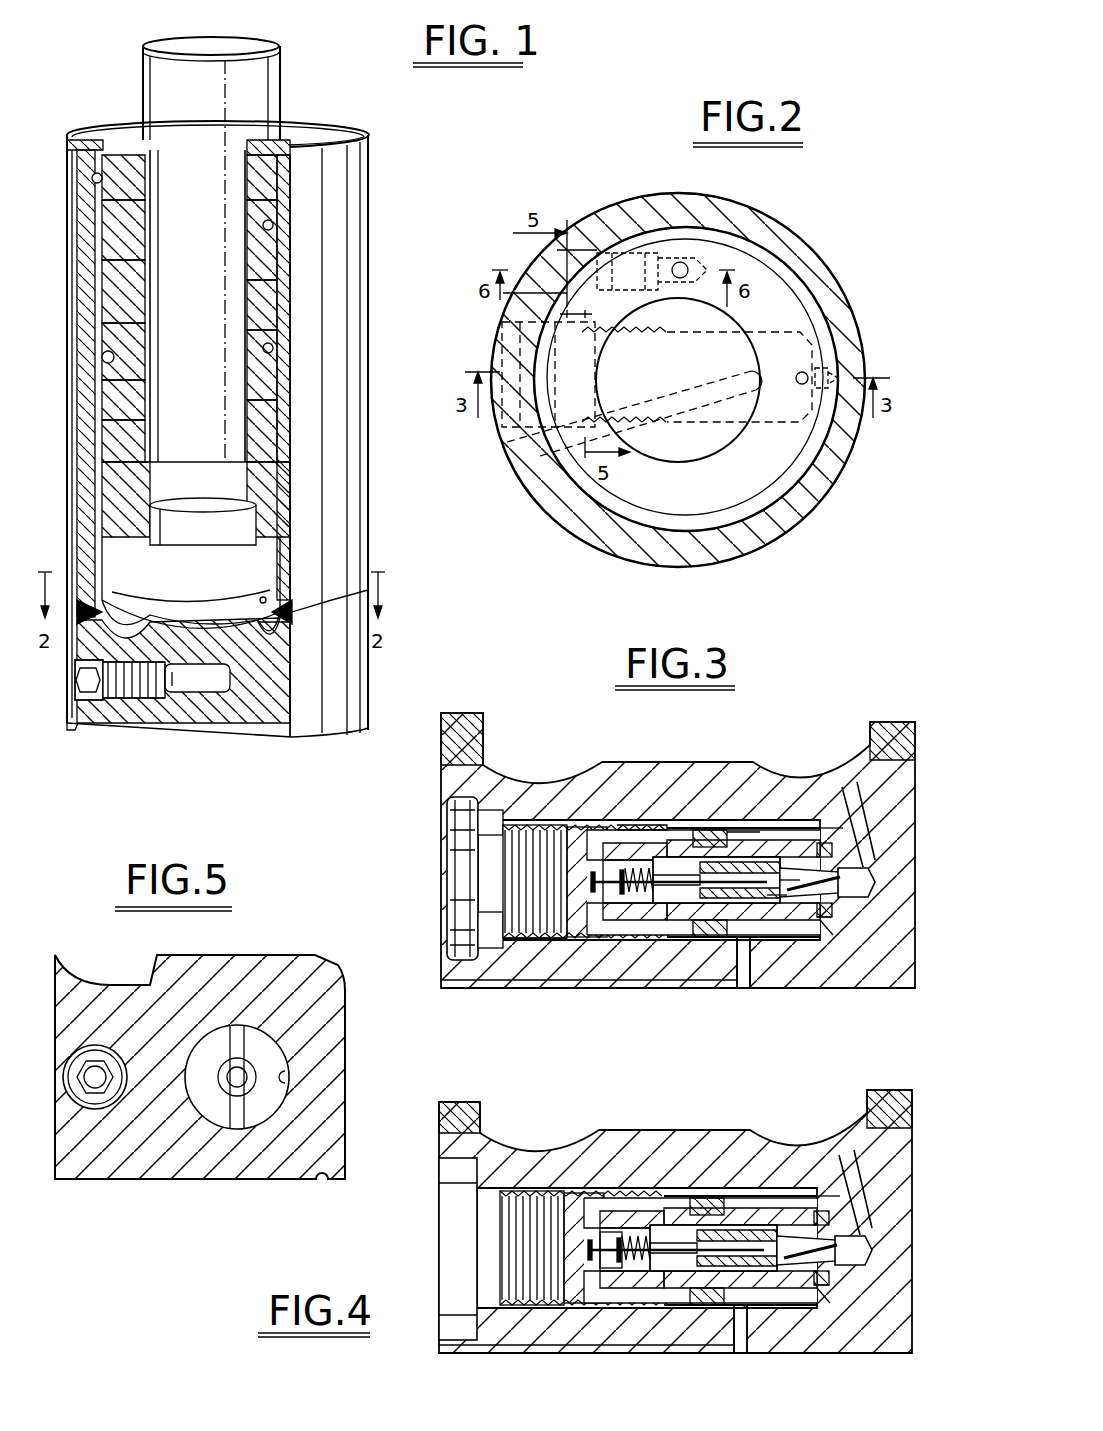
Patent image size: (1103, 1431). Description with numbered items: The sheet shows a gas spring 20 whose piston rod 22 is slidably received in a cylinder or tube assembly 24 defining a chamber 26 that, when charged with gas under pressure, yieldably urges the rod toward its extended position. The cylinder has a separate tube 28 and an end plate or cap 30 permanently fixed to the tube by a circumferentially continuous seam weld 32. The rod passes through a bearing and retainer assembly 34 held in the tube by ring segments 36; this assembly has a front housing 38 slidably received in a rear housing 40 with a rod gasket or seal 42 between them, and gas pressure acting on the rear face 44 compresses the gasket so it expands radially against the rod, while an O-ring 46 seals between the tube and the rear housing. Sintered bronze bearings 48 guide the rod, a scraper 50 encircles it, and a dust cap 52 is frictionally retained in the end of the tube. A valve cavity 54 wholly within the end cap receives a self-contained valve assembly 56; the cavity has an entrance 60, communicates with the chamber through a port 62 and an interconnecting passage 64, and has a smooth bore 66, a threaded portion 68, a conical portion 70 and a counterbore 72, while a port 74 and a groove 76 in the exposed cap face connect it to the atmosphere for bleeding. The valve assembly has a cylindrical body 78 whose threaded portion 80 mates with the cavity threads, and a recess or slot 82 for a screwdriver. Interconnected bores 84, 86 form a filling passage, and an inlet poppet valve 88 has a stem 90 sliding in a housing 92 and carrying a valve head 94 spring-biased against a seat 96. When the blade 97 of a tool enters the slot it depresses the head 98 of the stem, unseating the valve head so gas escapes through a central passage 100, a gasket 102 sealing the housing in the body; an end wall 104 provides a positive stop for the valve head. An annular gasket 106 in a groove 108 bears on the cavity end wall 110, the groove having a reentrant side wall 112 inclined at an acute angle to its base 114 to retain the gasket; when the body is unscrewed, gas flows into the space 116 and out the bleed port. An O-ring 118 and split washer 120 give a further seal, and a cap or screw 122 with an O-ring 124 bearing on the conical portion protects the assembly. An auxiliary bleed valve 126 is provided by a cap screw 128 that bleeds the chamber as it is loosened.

In FIG. 1, the gas spring 20 is at (428, 111).
In FIG. 1, the piston rod 22 is at (274, 43).
In FIG. 1, the cylinder or tube assembly 24 is at (375, 305).
In FIG. 1, the chamber 26 is at (138, 553).
In FIG. 1, the tube 28 is at (347, 450).
In FIG. 1, the end plate or cap 30 is at (350, 668).
In FIG. 2, the end plate or cap 30 is at (678, 380).
In FIG. 5, the end plate or cap 30 is at (55, 1155).
In FIG. 1, the seam weld 32 is at (347, 590).
In FIG. 1, the bearing and retainer assembly 34 is at (95, 297).
In FIG. 1, the ring segments 36 is at (94, 176).
In FIG. 1, the front housing 38 is at (276, 190).
In FIG. 1, the rear housing 40 is at (107, 342).
In FIG. 1, the rod gasket or seal 42 is at (288, 275).
In FIG. 1, the rear face 44 is at (117, 422).
In FIG. 1, the O-ring 46 is at (104, 360).
In FIG. 1, the bearings 48 is at (262, 224).
In FIG. 1, the scraper 50 is at (300, 143).
In FIG. 1, the dust cap 52 is at (302, 131).
In FIG. 1, the valve cavity 54 is at (175, 697).
In FIG. 3, the self-contained valve assembly 56 is at (592, 890).
In FIG. 1, the entrance 60 is at (76, 677).
In FIG. 2, the entrance 60 is at (657, 374).
In FIG. 3, the port 62 is at (866, 883).
In FIG. 1, the interconnecting passage 64 is at (259, 600).
In FIG. 2, the interconnecting passage 64 is at (798, 385).
In FIG. 3, the interconnecting passage 64 is at (842, 787).
In FIG. 4, the interconnecting passage 64 is at (824, 1207).
In FIG. 1, the smooth bore 66 is at (217, 690).
In FIG. 1, the threaded portion 68 is at (143, 700).
In FIG. 5, the threaded portion 68 is at (285, 1090).
In FIG. 1, the conical portion 70 is at (108, 700).
In FIG. 1, the counterbore 72 is at (70, 722).
In FIG. 3, the counterbore 72 is at (447, 797).
In FIG. 3, the port 74 is at (740, 987).
In FIG. 4, the port 74 is at (738, 1345).
In FIG. 3, the groove 76 is at (475, 982).
In FIG. 4, the groove 76 is at (482, 1347).
In FIG. 5, the groove 76 is at (320, 1186).
In FIG. 3, the body 78 is at (617, 823).
In FIG. 5, the body 78 is at (270, 1053).
In FIG. 3, the threaded portion 80 is at (590, 848).
In FIG. 4, the threaded portion 80 is at (595, 1213).
In FIG. 3, the recess or slot 82 is at (605, 860).
In FIG. 4, the recess or slot 82 is at (590, 1293).
In FIG. 5, the recess or slot 82 is at (239, 1033).
In FIG. 3, the bore 84 is at (767, 895).
In FIG. 3, the bore 86 is at (810, 905).
In FIG. 3, the inlet poppet valve 88 is at (625, 907).
In FIG. 3, the stem 90 is at (505, 965).
In FIG. 4, the stem 90 is at (620, 1227).
In FIG. 3, the housing 92 is at (675, 913).
In FIG. 4, the housing 92 is at (657, 1230).
In FIG. 3, the valve head 94 is at (767, 857).
In FIG. 4, the valve head 94 is at (763, 1223).
In FIG. 4, the seat 96 is at (710, 1233).
In FIG. 4, the blade 97 is at (439, 1277).
In FIG. 3, the head 98 is at (580, 858).
In FIG. 4, the central passage 100 is at (685, 1255).
In FIG. 4, the gasket 102 is at (655, 1270).
In FIG. 3, the end wall 104 is at (800, 890).
In FIG. 4, the end wall 104 is at (607, 1228).
In FIG. 3, the annular gasket 106 is at (846, 895).
In FIG. 4, the annular gasket 106 is at (837, 1280).
In FIG. 3, the groove 108 is at (830, 915).
In FIG. 4, the groove 108 is at (827, 1290).
In FIG. 3, the cavity end wall 110 is at (813, 843).
In FIG. 4, the cavity end wall 110 is at (803, 1207).
In FIG. 3, the reentrant side wall 112 is at (822, 828).
In FIG. 4, the reentrant side wall 112 is at (830, 1210).
In FIG. 3, the base 114 is at (818, 917).
In FIG. 4, the base 114 is at (820, 1293).
In FIG. 3, the space 116 is at (732, 833).
In FIG. 4, the space 116 is at (775, 1280).
In FIG. 3, the O-ring 118 is at (700, 835).
In FIG. 3, the split washer 120 is at (637, 822).
In FIG. 3, the cap or screw 122 is at (478, 853).
In FIG. 3, the O-ring 124 is at (478, 938).
In FIG. 2, the auxiliary bleed valve 126 is at (632, 240).
In FIG. 5, the cap screw 128 is at (103, 1097).